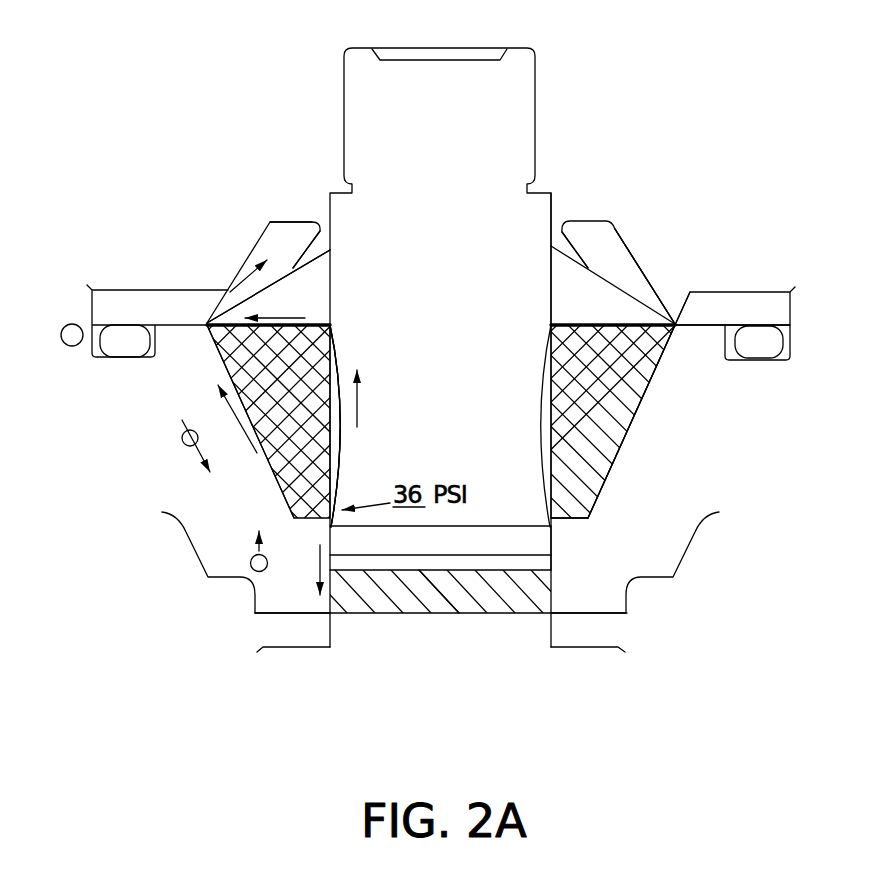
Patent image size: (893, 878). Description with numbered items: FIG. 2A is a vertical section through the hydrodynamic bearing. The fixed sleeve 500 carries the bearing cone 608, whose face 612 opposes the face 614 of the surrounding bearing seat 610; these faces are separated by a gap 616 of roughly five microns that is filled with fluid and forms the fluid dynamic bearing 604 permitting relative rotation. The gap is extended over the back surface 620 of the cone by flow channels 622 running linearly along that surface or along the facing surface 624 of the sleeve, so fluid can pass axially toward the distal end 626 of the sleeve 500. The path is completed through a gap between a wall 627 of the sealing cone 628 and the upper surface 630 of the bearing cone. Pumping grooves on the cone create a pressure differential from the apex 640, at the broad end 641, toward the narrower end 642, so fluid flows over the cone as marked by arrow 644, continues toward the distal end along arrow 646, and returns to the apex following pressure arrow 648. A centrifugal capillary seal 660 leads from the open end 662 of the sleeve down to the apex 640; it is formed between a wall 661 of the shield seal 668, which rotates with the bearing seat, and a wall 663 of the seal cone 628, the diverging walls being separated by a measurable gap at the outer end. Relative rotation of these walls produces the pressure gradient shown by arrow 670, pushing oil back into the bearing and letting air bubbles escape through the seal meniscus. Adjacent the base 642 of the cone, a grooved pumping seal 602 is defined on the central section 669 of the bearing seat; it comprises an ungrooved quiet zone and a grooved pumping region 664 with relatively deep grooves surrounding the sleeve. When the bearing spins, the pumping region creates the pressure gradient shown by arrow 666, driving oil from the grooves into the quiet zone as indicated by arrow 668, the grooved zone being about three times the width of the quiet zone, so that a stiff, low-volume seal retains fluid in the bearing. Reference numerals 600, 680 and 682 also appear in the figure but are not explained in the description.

The sleeve 500 is at (537, 107).
The seal assembly 600 is at (693, 242).
The grooved pumping seal 602 is at (575, 578).
The fluid dynamic bearing 604 is at (685, 435).
The bearing cone 608 is at (607, 380).
The bearing seat 610 is at (705, 514).
The face of the bearing cone 612 is at (662, 355).
The face of the bearing seat 614 is at (617, 445).
The gap 616 is at (690, 322).
The back surface of the bearing cone 620 is at (336, 357).
The flow channels 622 is at (337, 440).
The facing surface of the sleeve 624 is at (333, 360).
The distal end of the sleeve 626 is at (442, 68).
The wall of the sealing cone 627 is at (326, 318).
The sealing cone 628 is at (318, 263).
The upper surface of the bearing cone 630 is at (205, 324).
The apex of the bearing cone 640 is at (195, 312).
The broad end of the bearing cone 641 is at (200, 342).
The narrower end of the bearing cone 642 is at (312, 520).
The flow arrow 644 is at (184, 444).
The flow path arrow 646 is at (365, 388).
The pressure arrow 648 is at (297, 290).
The centrifugal capillary seal 660 is at (602, 272).
The wall of the shield seal 661 is at (618, 290).
The open end of the sleeve 662 is at (555, 232).
The wall of the seal cone 663 is at (430, 598).
The grooved pumping region 664 is at (535, 595).
The pressure gradient arrow 666 is at (288, 598).
The shield seal 668 is at (118, 300).
The central section of the bearing seat 669 is at (555, 542).
The pressure gradient arrow 670 is at (228, 263).
The bolt hole 680 is at (78, 346).
The O-ring 682 is at (122, 345).